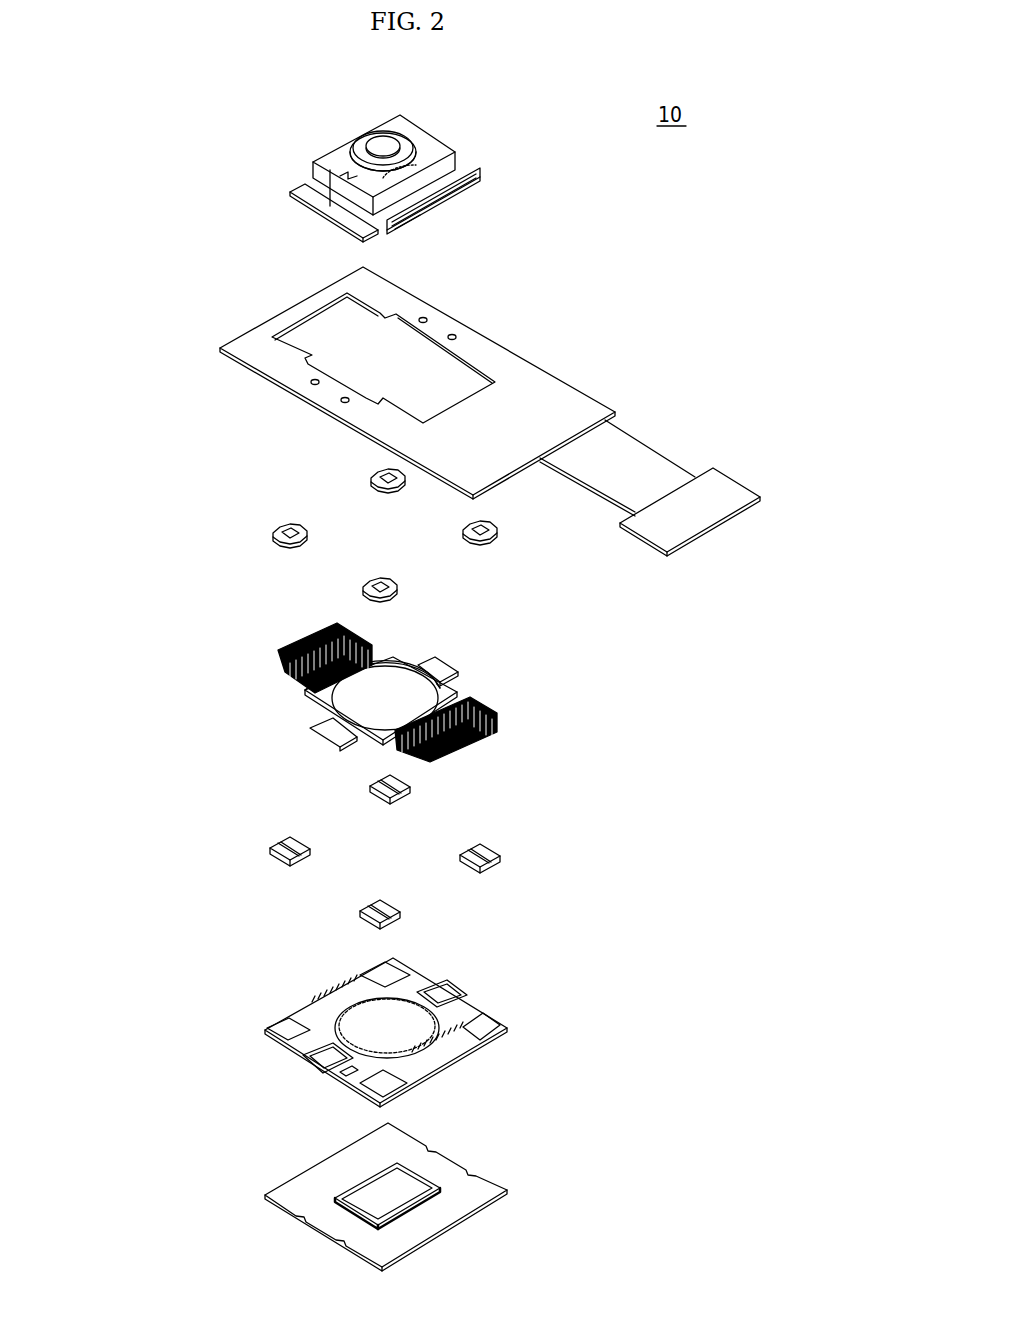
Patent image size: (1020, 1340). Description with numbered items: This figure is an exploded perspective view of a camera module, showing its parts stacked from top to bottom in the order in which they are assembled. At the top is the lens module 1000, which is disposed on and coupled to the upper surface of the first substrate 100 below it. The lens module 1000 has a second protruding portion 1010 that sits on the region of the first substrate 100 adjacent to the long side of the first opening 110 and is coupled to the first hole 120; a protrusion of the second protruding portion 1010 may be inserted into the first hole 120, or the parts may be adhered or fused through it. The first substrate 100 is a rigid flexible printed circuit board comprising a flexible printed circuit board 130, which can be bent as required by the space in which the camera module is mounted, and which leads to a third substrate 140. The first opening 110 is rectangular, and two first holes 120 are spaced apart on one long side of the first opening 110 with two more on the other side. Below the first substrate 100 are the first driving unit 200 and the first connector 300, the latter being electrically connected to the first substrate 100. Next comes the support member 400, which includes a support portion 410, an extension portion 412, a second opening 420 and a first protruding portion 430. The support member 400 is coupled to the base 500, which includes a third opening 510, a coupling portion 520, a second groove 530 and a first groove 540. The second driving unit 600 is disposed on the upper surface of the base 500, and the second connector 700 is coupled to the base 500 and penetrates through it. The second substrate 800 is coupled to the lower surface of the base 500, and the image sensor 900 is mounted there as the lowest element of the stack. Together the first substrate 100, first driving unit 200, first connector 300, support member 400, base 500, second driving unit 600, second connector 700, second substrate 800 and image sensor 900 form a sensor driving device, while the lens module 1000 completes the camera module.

The lens module 1000 is at (436, 131).
The second protruding portion 1010 is at (305, 196).
The first substrate 100 is at (547, 378).
The first opening 110 is at (336, 338).
The first hole 120 is at (453, 334).
The flexible printed circuit board 130 is at (645, 450).
The third substrate 140 is at (718, 476).
The first driving unit 200 is at (270, 528).
The first connector 300 is at (490, 715).
The support member 400 is at (410, 656).
The support portion 410 is at (320, 705).
The extension portion 412 is at (380, 650).
The second opening 420 is at (402, 686).
The first protruding portion 430 is at (322, 740).
The base 500 is at (505, 1028).
The third opening 510 is at (396, 1016).
The coupling portion 520 is at (320, 1068).
The second groove 530 is at (348, 1078).
The first groove 540 is at (288, 1024).
The second driving unit 600 is at (268, 851).
The second connector 700 is at (455, 1056).
The second substrate 800 is at (480, 1196).
The image sensor 900 is at (400, 1192).